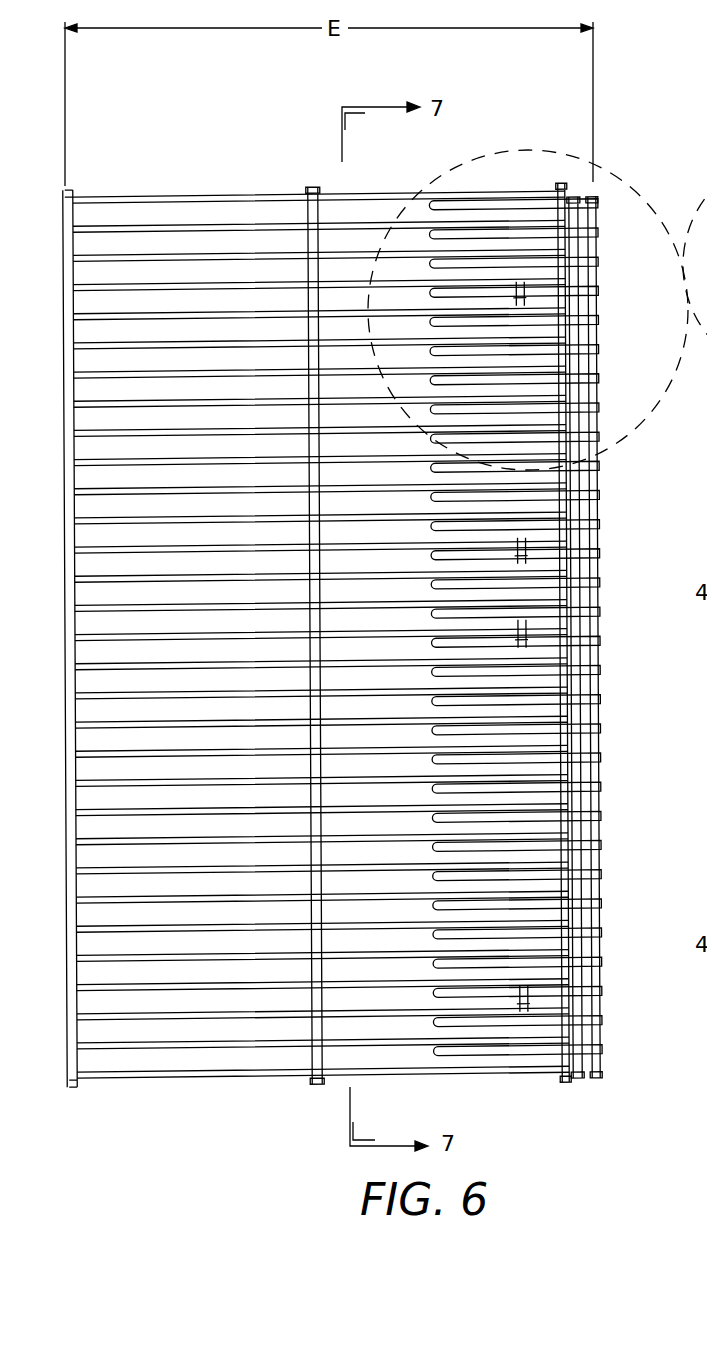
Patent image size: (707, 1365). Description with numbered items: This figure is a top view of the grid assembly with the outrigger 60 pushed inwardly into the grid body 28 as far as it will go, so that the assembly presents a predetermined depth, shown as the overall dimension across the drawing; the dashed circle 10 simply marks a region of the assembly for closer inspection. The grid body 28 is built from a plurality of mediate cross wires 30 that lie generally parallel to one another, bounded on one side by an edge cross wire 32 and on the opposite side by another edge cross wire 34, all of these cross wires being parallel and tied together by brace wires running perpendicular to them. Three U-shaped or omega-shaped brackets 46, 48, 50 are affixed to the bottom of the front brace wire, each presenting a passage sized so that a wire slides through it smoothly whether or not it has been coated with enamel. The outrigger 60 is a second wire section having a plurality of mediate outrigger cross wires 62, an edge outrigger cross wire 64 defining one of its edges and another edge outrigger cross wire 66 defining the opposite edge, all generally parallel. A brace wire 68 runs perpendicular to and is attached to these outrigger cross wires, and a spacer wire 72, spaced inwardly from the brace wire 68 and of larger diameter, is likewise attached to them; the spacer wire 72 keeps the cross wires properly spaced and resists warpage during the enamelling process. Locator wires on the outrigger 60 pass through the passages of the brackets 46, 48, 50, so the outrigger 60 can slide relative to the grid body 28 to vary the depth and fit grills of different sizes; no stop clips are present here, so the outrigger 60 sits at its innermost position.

The detail circle of grate assembly 10 is at (624, 187).
The grid body 28 is at (66, 190).
The mediate cross wires 30 is at (100, 454).
The edge cross wire 32 is at (172, 1077).
The edge cross wire 34 is at (170, 196).
The U-shaped bracket 46 is at (515, 1005).
The U-shaped bracket 48 is at (527, 620).
The U-shaped bracket 50 is at (520, 300).
The outrigger 60 is at (603, 1019).
The mediate outrigger cross wires 62 is at (512, 553).
The edge outrigger cross wire 64 is at (540, 1072).
The edge outrigger cross wire 66 is at (486, 212).
The brace wire 68 is at (600, 601).
The spacer wire 72 is at (586, 723).